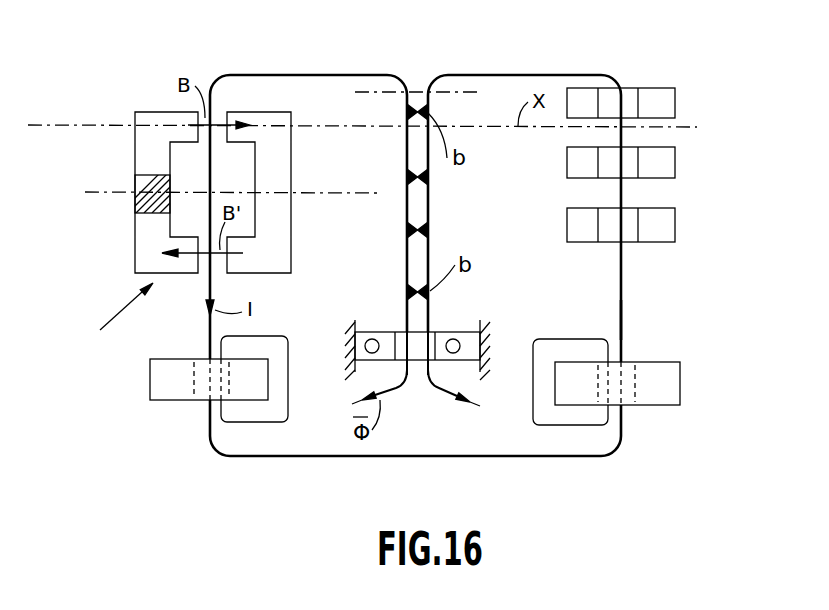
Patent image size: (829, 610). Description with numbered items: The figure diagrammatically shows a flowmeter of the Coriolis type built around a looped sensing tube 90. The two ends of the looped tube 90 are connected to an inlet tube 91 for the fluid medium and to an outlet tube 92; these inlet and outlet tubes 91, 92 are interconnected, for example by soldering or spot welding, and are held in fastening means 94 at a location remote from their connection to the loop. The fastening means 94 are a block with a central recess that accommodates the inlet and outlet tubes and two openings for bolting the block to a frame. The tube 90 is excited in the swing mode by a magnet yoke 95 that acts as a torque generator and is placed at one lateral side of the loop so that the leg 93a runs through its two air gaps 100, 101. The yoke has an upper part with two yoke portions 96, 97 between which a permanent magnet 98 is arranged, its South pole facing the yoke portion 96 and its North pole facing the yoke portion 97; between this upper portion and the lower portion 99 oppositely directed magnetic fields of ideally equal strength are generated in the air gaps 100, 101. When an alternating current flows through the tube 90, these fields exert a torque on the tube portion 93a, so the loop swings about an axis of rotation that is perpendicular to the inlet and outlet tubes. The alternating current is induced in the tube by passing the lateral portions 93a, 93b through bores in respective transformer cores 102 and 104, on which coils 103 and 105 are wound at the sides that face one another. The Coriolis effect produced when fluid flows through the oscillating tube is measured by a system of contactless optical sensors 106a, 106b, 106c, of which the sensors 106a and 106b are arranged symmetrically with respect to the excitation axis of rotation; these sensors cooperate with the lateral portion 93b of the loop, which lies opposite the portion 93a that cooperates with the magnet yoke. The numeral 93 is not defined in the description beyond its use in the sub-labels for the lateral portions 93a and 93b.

The looped sensing tube 90 is at (328, 74).
The inlet tube 91 is at (406, 150).
The outlet tube 92 is at (433, 210).
The magnetic circuit branch 93 is at (306, 197).
The leg of the loop 93a is at (212, 162).
The lateral portion of the loop 93b is at (623, 330).
The fastening means 94 is at (382, 330).
The magnet yoke 95 is at (106, 319).
The yoke portion 96 is at (147, 256).
The yoke portion 97 is at (158, 110).
The permanent magnet 98 is at (137, 178).
The lower portion of the yoke 99 is at (268, 112).
The air gap 100 is at (220, 117).
The air gap 101 is at (202, 262).
The transformer core 102 is at (180, 388).
The coil 103 is at (253, 412).
The transformer core 104 is at (658, 385).
The coil 105 is at (565, 415).
The contactless optical sensor 106a is at (662, 105).
The contactless optical sensor 106b is at (657, 165).
The contactless optical sensor 106c is at (657, 225).